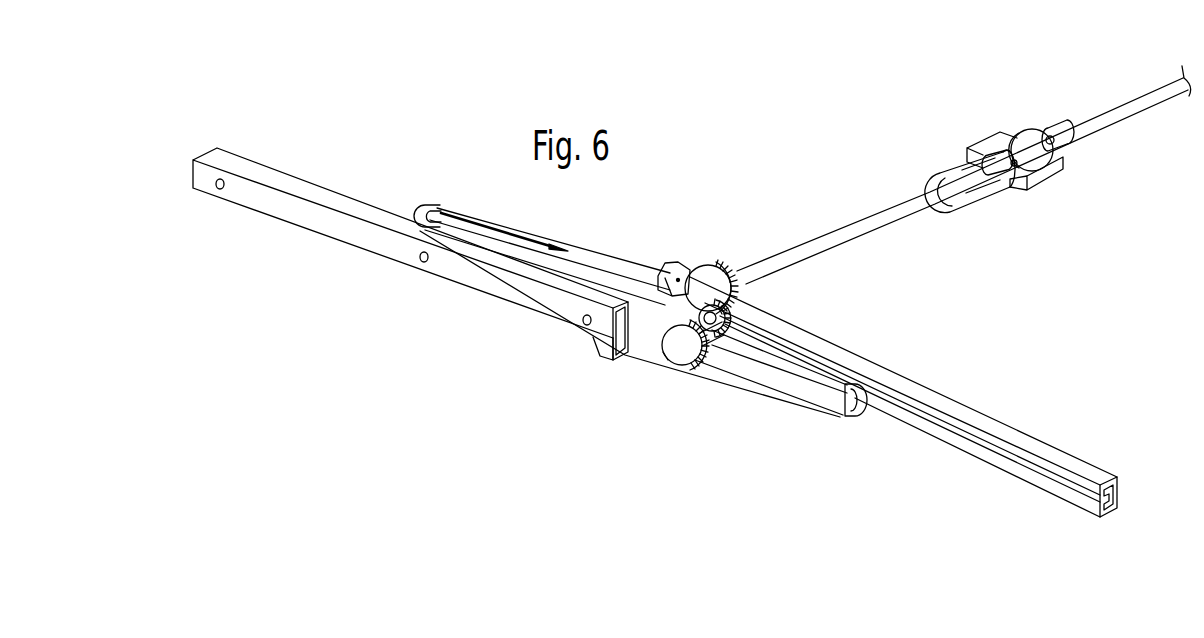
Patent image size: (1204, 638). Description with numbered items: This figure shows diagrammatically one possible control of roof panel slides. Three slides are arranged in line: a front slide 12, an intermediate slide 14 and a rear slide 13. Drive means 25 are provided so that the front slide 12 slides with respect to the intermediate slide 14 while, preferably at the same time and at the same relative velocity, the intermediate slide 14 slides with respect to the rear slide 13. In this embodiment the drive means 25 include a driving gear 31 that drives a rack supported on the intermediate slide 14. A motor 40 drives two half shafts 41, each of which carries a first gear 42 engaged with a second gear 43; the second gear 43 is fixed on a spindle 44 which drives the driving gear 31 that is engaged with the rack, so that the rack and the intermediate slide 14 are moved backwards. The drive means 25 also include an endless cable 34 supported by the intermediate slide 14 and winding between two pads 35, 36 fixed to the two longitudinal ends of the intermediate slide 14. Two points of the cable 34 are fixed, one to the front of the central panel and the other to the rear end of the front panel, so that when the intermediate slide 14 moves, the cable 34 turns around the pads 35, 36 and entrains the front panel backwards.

The front slide 12 is at (277, 166).
The rear slide 13 is at (1047, 440).
The intermediate slide 14 is at (446, 206).
The drive means 25 is at (678, 378).
The driving gear 31 is at (666, 360).
The endless cable 34 is at (518, 292).
The pad 35 is at (462, 217).
The pad 36 is at (846, 420).
The motor 40 is at (982, 137).
The half shaft 41 is at (852, 216).
The first gear 42 is at (688, 266).
The second gear 43 is at (745, 330).
The spindle 44 is at (716, 353).